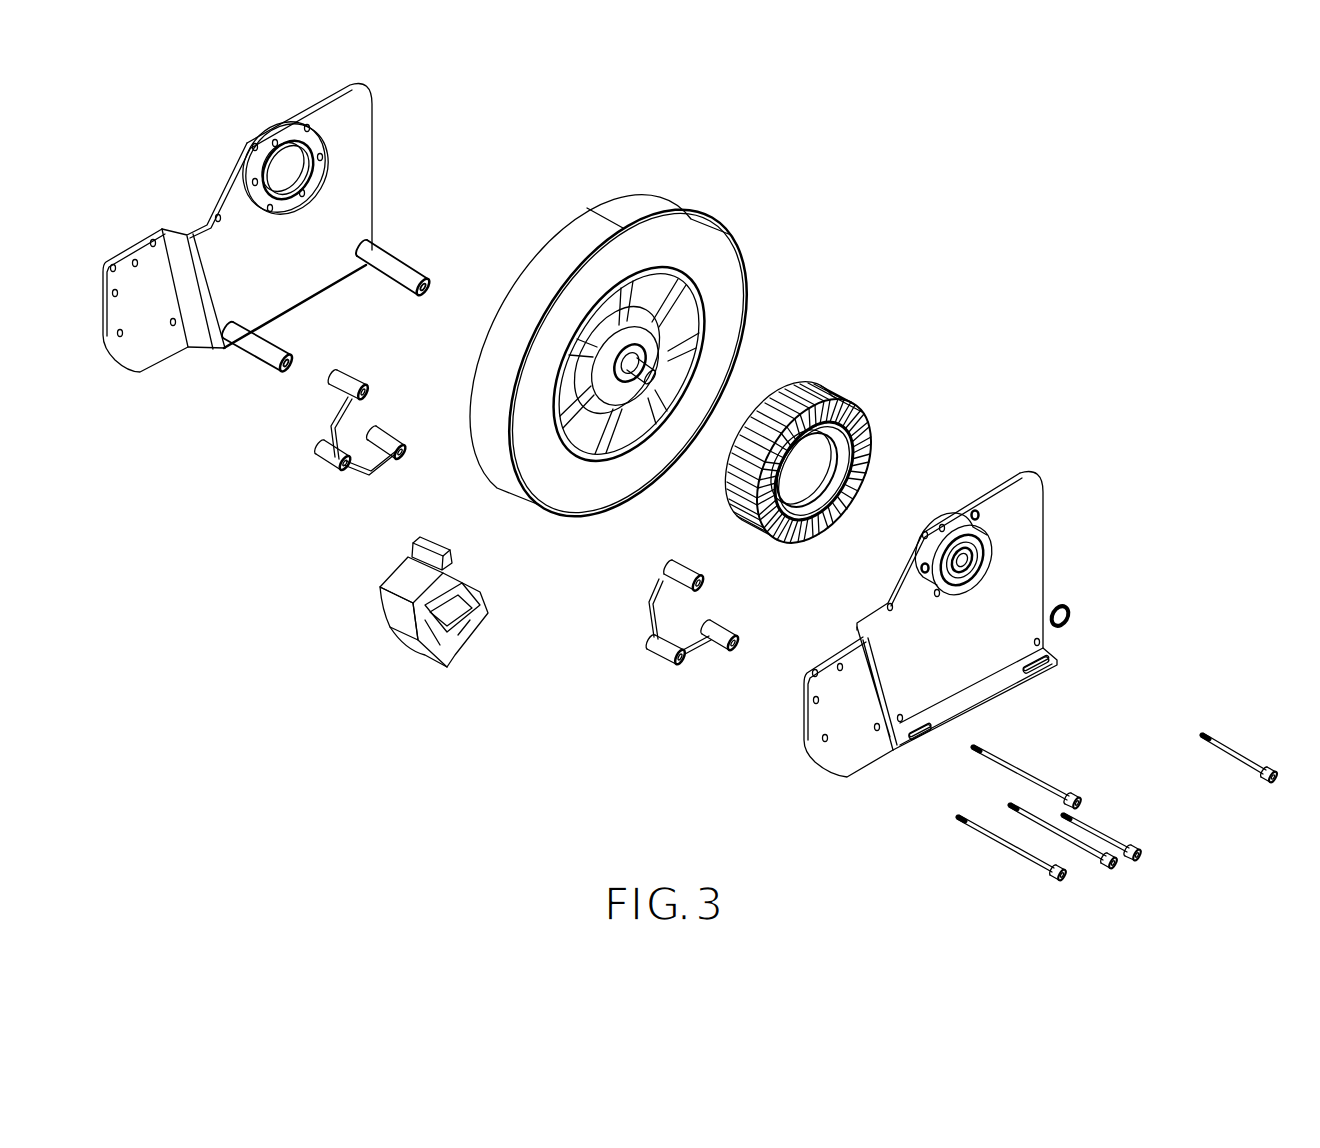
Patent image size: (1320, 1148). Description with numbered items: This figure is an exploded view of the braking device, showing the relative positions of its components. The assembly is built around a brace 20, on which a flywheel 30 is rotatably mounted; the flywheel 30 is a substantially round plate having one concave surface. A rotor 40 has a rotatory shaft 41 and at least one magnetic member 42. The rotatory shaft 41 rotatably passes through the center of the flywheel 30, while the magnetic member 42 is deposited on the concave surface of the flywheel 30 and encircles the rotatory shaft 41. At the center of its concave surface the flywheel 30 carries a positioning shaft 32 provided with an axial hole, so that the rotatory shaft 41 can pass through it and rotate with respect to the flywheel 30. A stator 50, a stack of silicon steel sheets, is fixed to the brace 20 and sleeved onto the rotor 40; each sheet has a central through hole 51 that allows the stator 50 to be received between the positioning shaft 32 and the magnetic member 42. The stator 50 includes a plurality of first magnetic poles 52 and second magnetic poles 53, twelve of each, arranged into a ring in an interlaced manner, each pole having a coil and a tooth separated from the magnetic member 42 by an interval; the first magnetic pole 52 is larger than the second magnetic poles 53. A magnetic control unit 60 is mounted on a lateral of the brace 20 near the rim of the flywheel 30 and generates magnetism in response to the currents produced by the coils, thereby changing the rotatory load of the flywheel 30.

The brace 20 is at (1020, 578).
The flywheel 30 is at (667, 342).
The positioning shaft 32 is at (602, 343).
The rotor 40 is at (693, 296).
The rotatory shaft 41 is at (653, 375).
The magnetic member 42 is at (693, 320).
The stator 50 is at (845, 436).
The through hole 51 is at (798, 470).
The first magnetic pole 52 is at (870, 417).
The second magnetic pole 53 is at (860, 417).
The magnetic control unit 60 is at (397, 617).